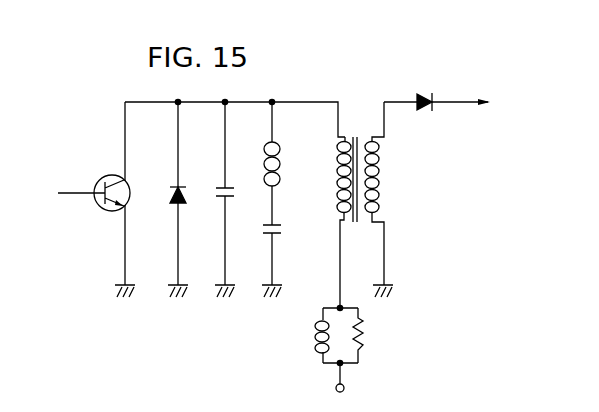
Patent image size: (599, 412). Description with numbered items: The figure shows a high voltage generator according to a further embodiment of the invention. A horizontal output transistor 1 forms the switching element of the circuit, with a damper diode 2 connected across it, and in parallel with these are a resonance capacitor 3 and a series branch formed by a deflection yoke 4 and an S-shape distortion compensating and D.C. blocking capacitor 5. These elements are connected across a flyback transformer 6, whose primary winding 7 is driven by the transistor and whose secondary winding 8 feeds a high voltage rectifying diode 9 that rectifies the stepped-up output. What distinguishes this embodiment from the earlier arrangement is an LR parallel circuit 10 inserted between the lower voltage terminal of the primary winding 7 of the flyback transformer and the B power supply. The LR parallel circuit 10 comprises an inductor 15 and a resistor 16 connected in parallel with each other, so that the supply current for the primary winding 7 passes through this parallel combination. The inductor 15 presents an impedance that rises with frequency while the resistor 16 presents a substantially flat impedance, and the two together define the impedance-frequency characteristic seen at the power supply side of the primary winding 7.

The horizontal output transistor 1 is at (106, 176).
The damper diode 2 is at (175, 186).
The resonance capacitor 3 is at (221, 189).
The deflection yoke 4 is at (265, 170).
The S-shape distortion compensating and D.C. blocking capacitor 5 is at (262, 232).
The flyback transformer 6 is at (365, 131).
The primary winding 7 is at (340, 200).
The secondary winding 8 is at (379, 190).
The high voltage rectifying diode 9 is at (430, 109).
The LR parallel circuit 10 is at (374, 299).
The inductor 15 is at (319, 344).
The resistor 16 is at (364, 343).